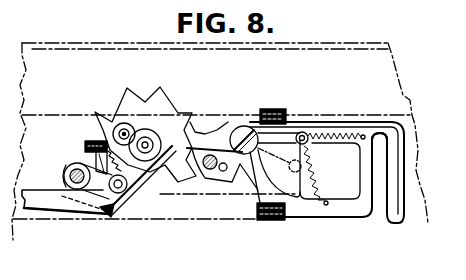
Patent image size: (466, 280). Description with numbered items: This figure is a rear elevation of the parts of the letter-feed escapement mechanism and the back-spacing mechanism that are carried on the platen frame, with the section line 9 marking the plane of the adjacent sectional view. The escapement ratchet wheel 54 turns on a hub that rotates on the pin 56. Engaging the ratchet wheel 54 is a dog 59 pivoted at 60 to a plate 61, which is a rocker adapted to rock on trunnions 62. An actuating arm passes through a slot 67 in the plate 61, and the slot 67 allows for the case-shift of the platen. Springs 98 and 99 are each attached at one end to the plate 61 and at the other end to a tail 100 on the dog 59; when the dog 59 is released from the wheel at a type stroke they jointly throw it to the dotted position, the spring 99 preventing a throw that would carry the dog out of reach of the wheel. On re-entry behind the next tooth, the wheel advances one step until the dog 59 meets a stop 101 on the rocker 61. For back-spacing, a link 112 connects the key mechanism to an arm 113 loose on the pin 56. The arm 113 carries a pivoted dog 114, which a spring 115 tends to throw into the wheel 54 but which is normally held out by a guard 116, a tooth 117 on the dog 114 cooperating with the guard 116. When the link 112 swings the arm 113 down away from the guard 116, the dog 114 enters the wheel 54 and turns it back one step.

The section line 9- 9 is at (143, 80).
The ratchet wheel 54 is at (165, 110).
The pin 56 is at (150, 142).
The dog 59 is at (231, 127).
The pivot 60 is at (256, 126).
The plate 61 is at (333, 124).
The trunnions 62 is at (271, 109).
The slot 67 is at (383, 180).
The spring 98 is at (318, 168).
The spring 99 is at (325, 142).
The tail 100 is at (284, 133).
The stop 101 is at (203, 181).
The link 112 is at (65, 205).
The arm 113 is at (147, 172).
The dog 114 is at (110, 215).
The spring 115 is at (128, 126).
The guard 116 is at (93, 140).
The tooth 117 is at (121, 181).